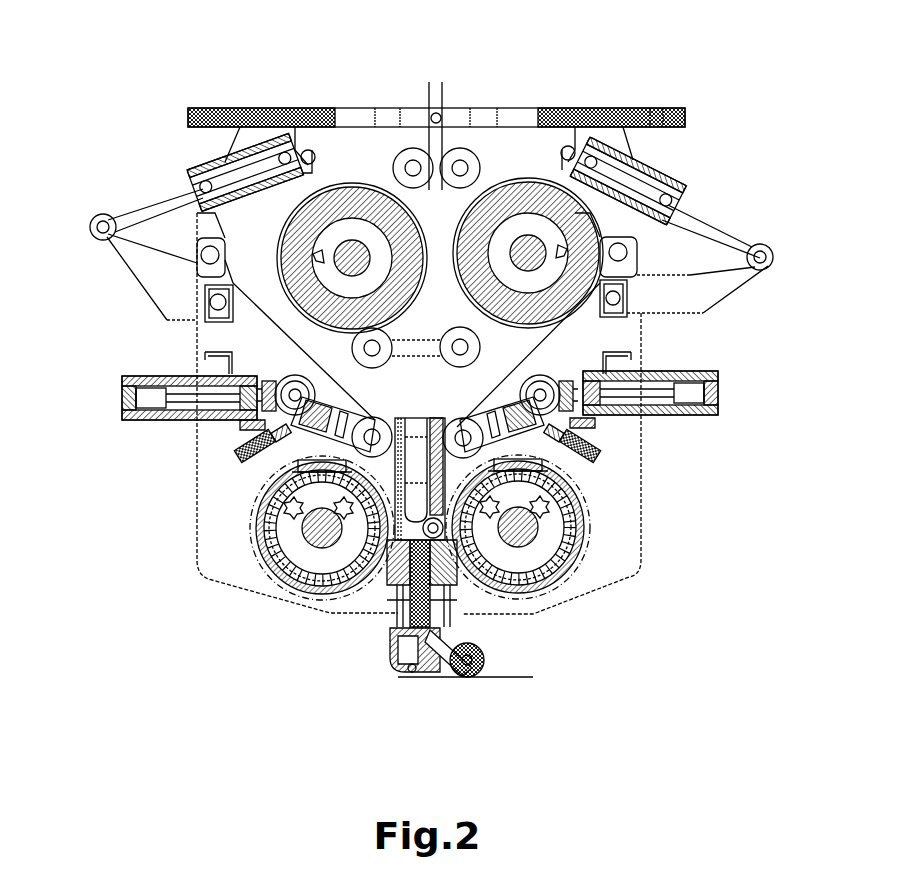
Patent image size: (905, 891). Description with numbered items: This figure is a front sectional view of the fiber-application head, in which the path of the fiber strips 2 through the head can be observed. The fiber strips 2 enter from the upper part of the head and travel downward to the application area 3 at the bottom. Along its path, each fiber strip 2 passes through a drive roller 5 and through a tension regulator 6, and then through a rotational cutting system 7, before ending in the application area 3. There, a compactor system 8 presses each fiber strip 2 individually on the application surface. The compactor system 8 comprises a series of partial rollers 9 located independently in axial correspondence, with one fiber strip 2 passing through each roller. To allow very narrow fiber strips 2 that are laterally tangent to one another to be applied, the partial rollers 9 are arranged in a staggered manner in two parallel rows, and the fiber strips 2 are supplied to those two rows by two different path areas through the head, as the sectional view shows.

The fiber strips 2 is at (428, 95).
The application area 3 is at (430, 680).
The drive roller 5 is at (305, 222).
The tension regulator 6 is at (133, 378).
The rotational cutting system 7 is at (262, 560).
The compactor system 8 is at (385, 668).
The partial rollers 9 is at (412, 672).